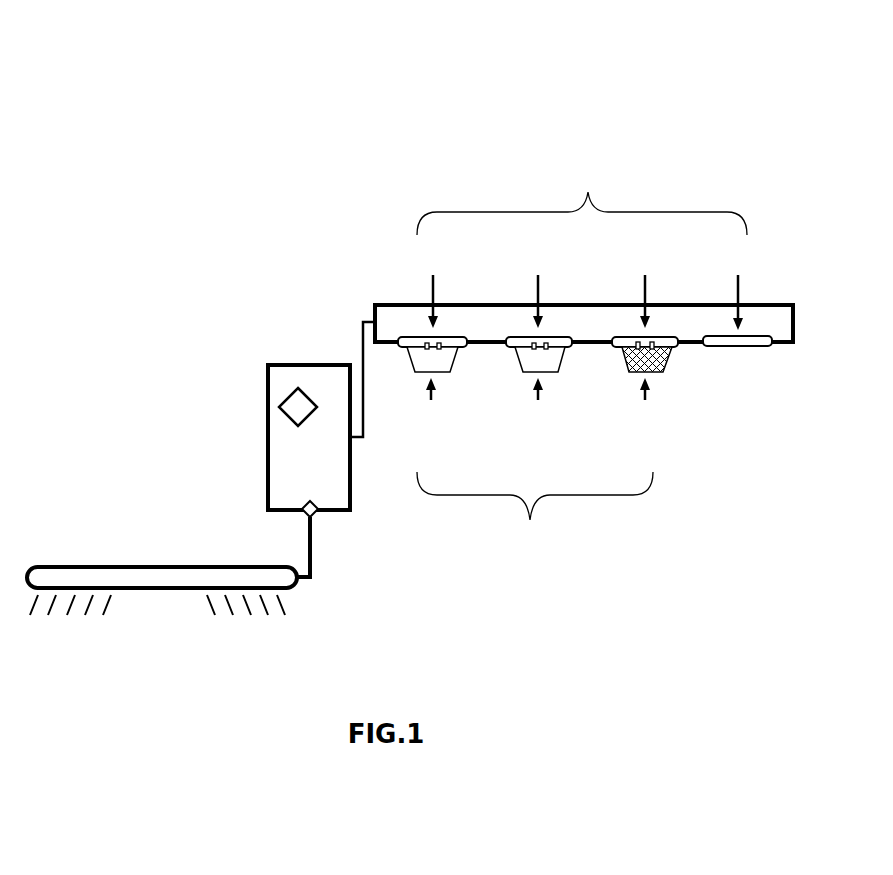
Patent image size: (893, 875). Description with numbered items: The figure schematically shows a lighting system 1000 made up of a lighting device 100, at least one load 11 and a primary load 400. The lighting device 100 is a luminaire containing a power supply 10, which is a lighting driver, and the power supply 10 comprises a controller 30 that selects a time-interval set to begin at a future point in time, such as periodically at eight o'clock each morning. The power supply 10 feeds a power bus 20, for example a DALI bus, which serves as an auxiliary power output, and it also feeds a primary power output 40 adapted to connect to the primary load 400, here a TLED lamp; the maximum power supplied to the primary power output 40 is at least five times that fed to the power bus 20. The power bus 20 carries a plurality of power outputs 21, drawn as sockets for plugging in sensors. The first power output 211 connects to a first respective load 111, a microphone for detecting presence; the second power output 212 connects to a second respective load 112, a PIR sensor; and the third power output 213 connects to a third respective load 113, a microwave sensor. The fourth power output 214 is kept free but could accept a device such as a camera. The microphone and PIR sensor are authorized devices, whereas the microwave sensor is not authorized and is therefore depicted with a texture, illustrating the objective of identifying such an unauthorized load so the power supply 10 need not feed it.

The lighting system 1000 is at (167, 112).
The lighting device 100 is at (293, 220).
The power supply 10 is at (257, 435).
The power bus 20 is at (343, 321).
The plurality of power outputs 21 is at (588, 180).
The first power output 211 is at (433, 289).
The second power output 212 is at (538, 289).
The third power output 213 is at (645, 289).
The fourth power output 214 is at (738, 290).
The at least one load 11 is at (530, 540).
The first respective load 111 is at (413, 468).
The second respective load 112 is at (519, 468).
The third respective load 113 is at (628, 468).
The controller 30 is at (293, 407).
The primary power output 40 is at (291, 521).
The primary load 400 is at (145, 540).